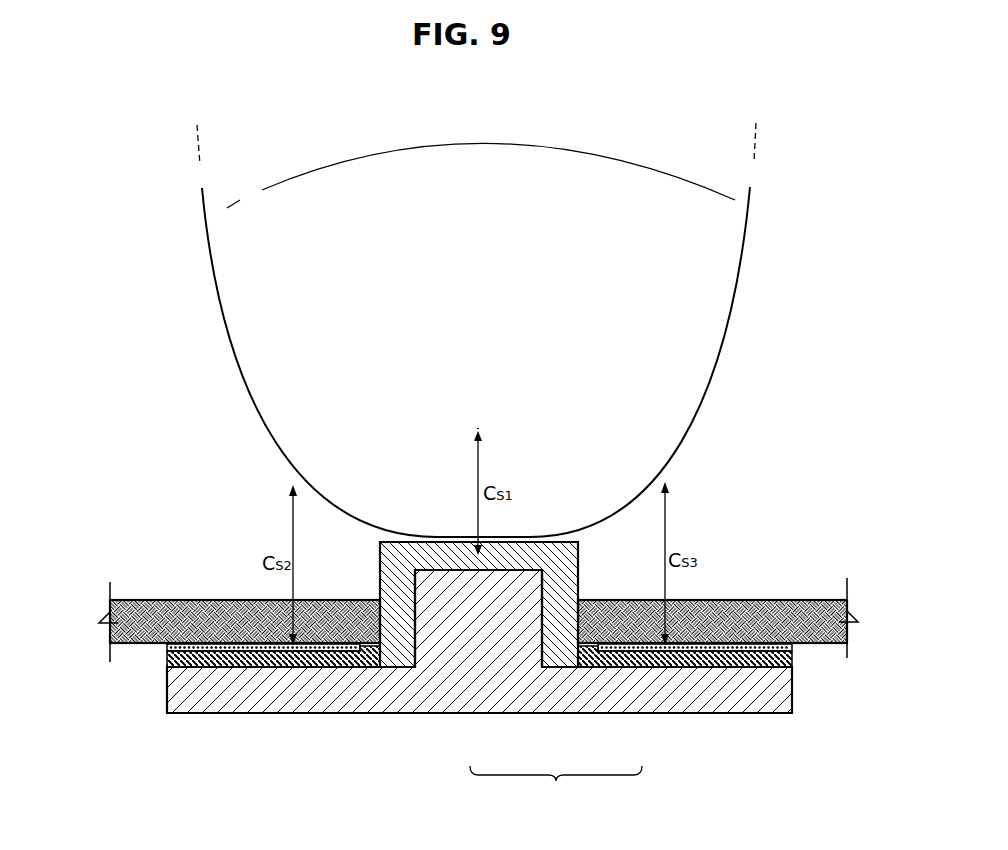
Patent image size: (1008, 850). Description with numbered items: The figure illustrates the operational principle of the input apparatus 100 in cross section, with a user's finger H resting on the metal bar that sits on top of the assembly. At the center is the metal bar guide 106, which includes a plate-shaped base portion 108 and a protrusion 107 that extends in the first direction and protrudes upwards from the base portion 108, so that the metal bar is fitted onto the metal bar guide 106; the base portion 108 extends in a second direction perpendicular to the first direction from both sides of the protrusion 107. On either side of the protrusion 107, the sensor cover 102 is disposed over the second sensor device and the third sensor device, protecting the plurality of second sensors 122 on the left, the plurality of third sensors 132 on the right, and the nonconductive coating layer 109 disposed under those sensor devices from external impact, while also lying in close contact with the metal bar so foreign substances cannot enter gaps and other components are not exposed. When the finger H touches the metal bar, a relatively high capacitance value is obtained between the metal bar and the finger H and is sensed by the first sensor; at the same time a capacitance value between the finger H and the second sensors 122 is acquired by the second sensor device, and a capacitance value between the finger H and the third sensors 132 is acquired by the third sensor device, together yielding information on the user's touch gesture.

The user's finger H is at (705, 360).
The input apparatus 100 is at (154, 530).
The sensor cover 102 is at (803, 600).
The metal bar guide 106 is at (556, 787).
The protrusion 107 is at (478, 615).
The base portion 108 is at (648, 705).
The nonconductive coating layer 109 is at (792, 656).
The second sensors 122 is at (270, 652).
The third sensors 132 is at (722, 655).